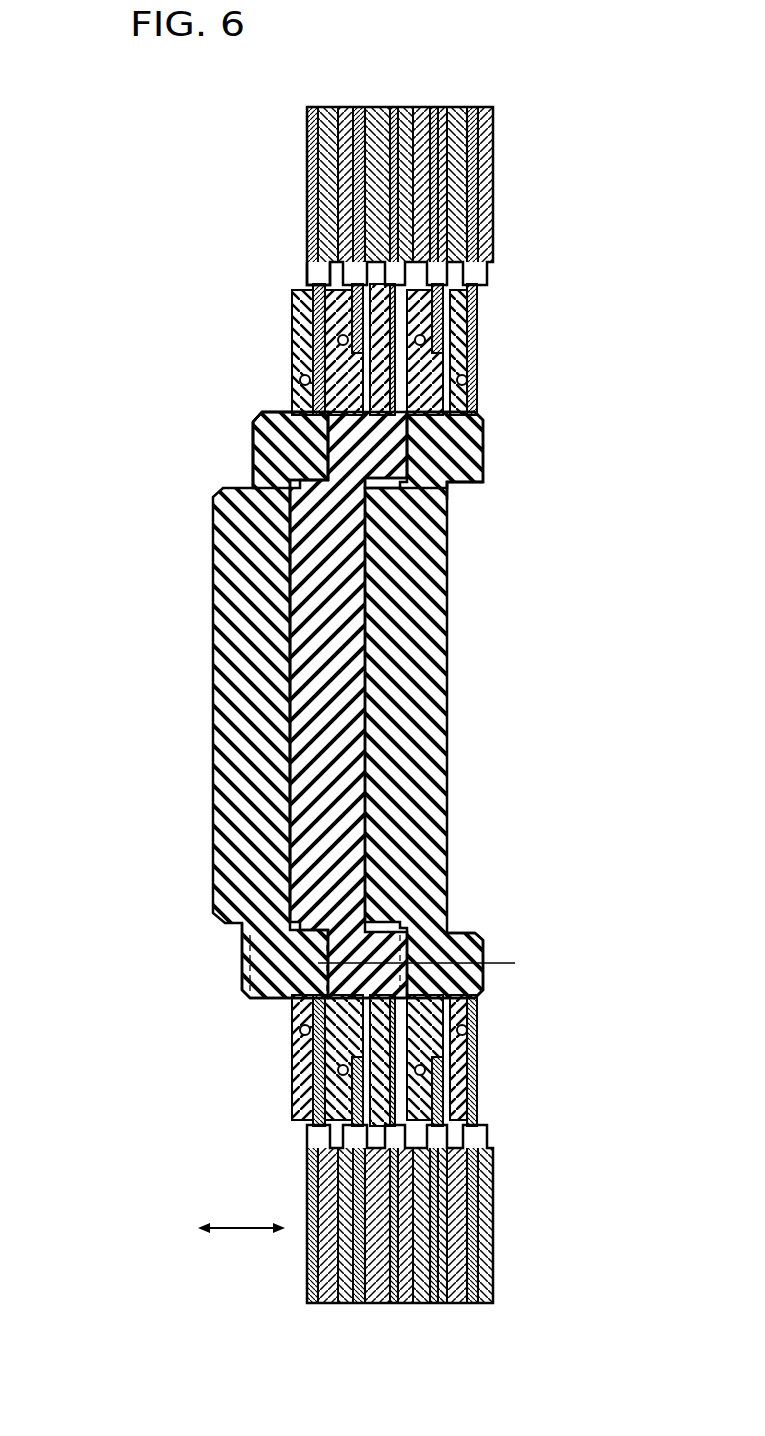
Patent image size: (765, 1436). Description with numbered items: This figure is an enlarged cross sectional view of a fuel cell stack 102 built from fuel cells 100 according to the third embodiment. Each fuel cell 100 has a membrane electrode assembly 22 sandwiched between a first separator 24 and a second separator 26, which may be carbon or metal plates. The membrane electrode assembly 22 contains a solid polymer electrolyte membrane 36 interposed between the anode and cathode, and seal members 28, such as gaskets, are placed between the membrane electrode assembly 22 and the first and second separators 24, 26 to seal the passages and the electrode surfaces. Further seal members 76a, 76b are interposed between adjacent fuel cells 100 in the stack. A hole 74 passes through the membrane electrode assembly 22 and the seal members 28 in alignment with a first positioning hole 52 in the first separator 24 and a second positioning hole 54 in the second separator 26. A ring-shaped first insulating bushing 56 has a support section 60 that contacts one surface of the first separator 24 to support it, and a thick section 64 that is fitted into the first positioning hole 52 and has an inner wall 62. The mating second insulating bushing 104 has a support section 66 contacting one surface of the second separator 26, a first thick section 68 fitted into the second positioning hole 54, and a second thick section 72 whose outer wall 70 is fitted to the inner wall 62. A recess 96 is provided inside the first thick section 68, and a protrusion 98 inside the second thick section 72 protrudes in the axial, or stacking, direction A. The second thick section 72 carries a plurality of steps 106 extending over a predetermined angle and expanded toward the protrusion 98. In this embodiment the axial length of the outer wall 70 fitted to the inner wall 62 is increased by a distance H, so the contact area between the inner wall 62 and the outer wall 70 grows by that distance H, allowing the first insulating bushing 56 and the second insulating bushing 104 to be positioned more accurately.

The fuel cell 100 is at (437, 43).
The first separator 24 is at (358, 104).
The membrane electrode assembly 22 is at (376, 104).
The second separator 26 is at (395, 104).
The fuel cell stack 102 is at (166, 117).
The seal member 76a is at (321, 147).
The seal member 76b is at (346, 206).
The seal member 28 is at (356, 170).
The solid polymer electrolyte membrane 36 is at (393, 131).
The hole 74 is at (340, 284).
The support section 60 is at (292, 300).
The first insulating bushing 56 is at (330, 350).
The first positioning hole 52 is at (330, 356).
The thick section 64 is at (325, 385).
The support section 66 is at (416, 318).
The outer wall 70 is at (268, 414).
The second thick section 72 is at (270, 437).
The inner wall 62 is at (305, 456).
The first thick section 68 is at (405, 438).
The second positioning hole 54 is at (407, 463).
The second insulating bushing 104 is at (447, 578).
The protrusion 98 is at (288, 637).
The recess 96 is at (288, 666).
The step 106 is at (242, 968).
The distance H is at (420, 954).
The direction A is at (241, 1215).